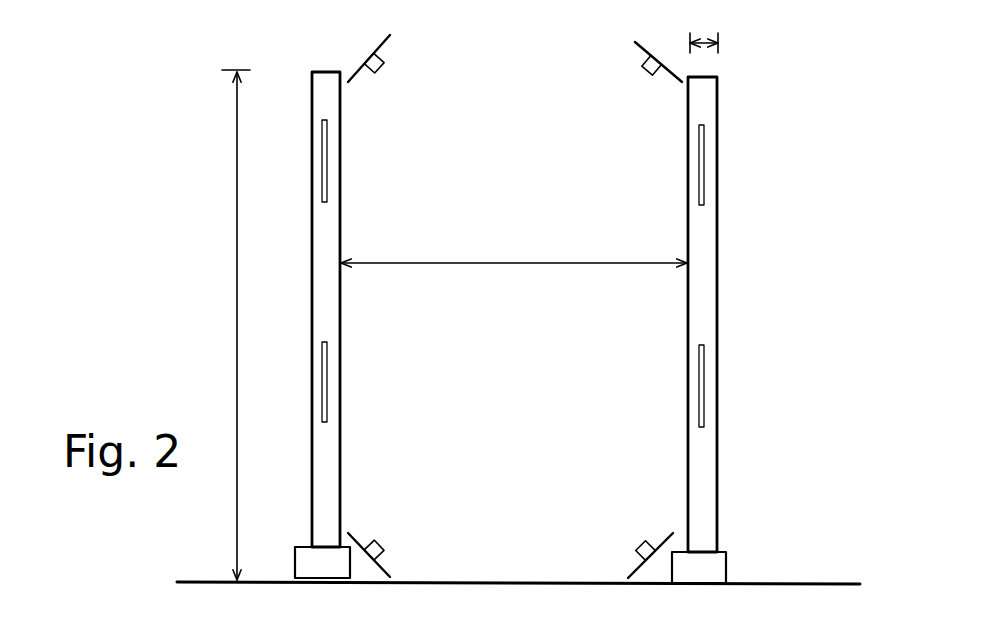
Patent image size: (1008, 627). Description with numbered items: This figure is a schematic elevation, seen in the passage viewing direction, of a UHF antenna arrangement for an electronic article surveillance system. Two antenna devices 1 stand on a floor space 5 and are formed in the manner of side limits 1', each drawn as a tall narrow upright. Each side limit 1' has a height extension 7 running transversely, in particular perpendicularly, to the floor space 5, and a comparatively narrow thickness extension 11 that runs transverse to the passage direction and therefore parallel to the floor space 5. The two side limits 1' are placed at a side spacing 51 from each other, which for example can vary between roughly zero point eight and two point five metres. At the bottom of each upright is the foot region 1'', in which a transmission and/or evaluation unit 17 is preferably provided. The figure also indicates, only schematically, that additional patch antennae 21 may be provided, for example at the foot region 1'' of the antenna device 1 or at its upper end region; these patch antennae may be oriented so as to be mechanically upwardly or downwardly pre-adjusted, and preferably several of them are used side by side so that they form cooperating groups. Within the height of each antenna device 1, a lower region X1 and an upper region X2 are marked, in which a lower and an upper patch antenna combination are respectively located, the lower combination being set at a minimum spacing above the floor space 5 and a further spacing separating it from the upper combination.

The antenna device 1 is at (360, 309).
The side limit 1' is at (760, 314).
The foot region 1'' is at (734, 560).
The floor space 5 is at (798, 582).
The height extension 7 is at (237, 210).
The thickness extension 11 is at (708, 48).
The transmission and/or evaluation unit 17 is at (310, 566).
The patch antenna 21 is at (388, 70).
The side spacing 51 is at (530, 268).
The lower region X1 is at (357, 148).
The upper region X2 is at (358, 383).